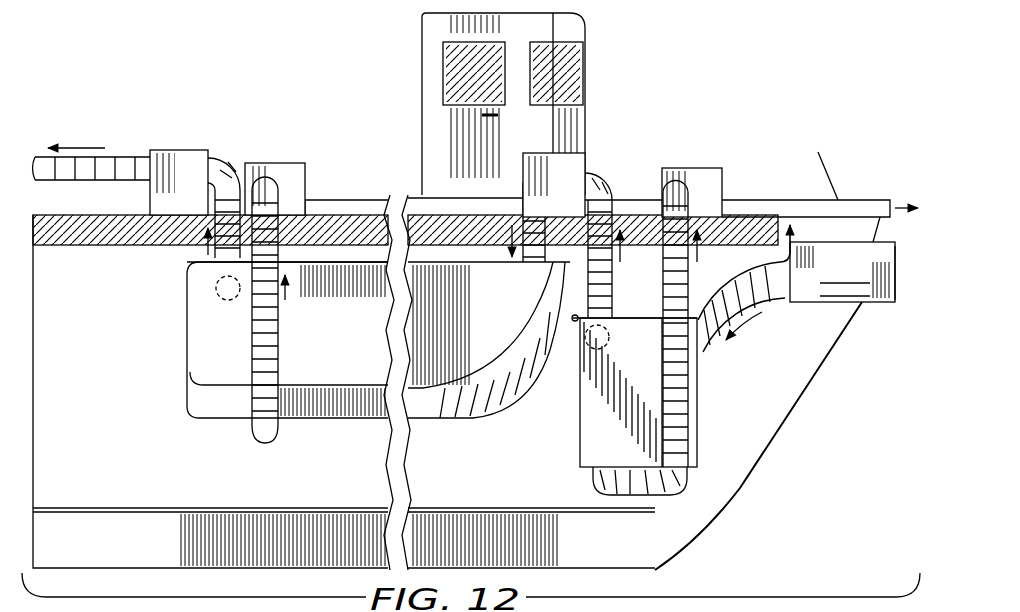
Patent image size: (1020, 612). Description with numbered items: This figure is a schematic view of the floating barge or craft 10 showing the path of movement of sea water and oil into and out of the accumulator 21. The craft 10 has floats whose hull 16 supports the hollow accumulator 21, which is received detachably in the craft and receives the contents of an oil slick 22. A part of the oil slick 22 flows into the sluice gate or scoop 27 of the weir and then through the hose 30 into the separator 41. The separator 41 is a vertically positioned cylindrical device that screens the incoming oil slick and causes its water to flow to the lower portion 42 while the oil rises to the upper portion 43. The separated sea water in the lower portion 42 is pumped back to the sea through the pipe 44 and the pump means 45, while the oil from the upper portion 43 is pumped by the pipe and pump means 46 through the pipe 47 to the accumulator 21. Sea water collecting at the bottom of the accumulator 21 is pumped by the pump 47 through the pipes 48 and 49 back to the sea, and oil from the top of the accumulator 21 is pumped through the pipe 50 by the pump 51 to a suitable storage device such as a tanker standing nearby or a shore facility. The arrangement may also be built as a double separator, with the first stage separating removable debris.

The floating barge or craft 10 is at (288, 133).
The hull 16 is at (684, 538).
The accumulator 21 is at (455, 410).
The oil slick 22 is at (898, 285).
The sluice gate 27 is at (872, 304).
The hose 30 is at (770, 305).
The separator 41 is at (578, 460).
The lower portion 42 is at (597, 433).
The upper portion 43 is at (630, 340).
The pipe 44 is at (690, 284).
The pump means 45 is at (722, 168).
The pipe and pump means 46 is at (600, 178).
The pipe and pump 47 is at (316, 163).
The pipe 48 is at (268, 372).
The pipe 49 is at (340, 187).
The pipe 50 is at (226, 168).
The pump 51 is at (176, 150).